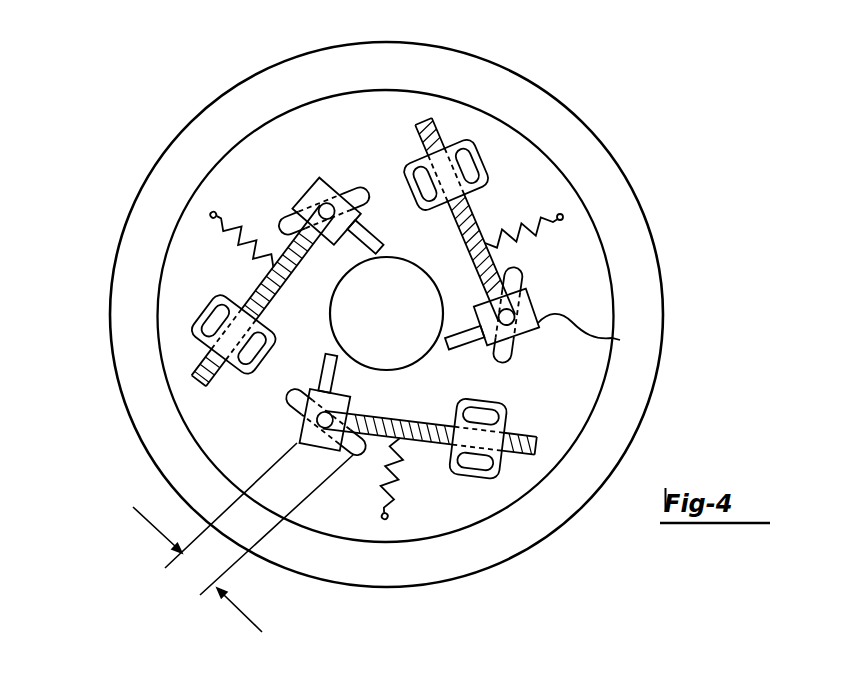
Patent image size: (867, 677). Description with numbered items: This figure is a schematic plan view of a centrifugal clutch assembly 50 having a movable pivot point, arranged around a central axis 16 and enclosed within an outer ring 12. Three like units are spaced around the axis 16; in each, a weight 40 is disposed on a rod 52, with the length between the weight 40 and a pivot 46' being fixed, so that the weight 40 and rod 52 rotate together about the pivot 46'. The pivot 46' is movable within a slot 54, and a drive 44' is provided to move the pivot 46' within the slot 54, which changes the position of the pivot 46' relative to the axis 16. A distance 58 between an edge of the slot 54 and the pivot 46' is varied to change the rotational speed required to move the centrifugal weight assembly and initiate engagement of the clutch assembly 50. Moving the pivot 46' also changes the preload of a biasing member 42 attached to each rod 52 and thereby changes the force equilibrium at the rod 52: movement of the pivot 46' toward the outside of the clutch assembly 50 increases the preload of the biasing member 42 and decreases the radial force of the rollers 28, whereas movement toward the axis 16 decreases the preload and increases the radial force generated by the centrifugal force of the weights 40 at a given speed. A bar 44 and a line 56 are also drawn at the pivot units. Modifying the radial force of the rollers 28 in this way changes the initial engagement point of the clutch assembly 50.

The housing ring 12 is at (610, 169).
The axis 16 is at (400, 327).
The rollers 28 is at (404, 152).
The weight 40 is at (446, 145).
The biasing member 42 is at (556, 215).
The bar 44 is at (491, 360).
The drive 44' is at (310, 317).
The pivot 46' is at (451, 358).
The clutch assembly 50 is at (160, 119).
The rod 52 is at (489, 206).
The slot 54 is at (528, 276).
The cable 56 is at (218, 428).
The distance 58 is at (242, 612).